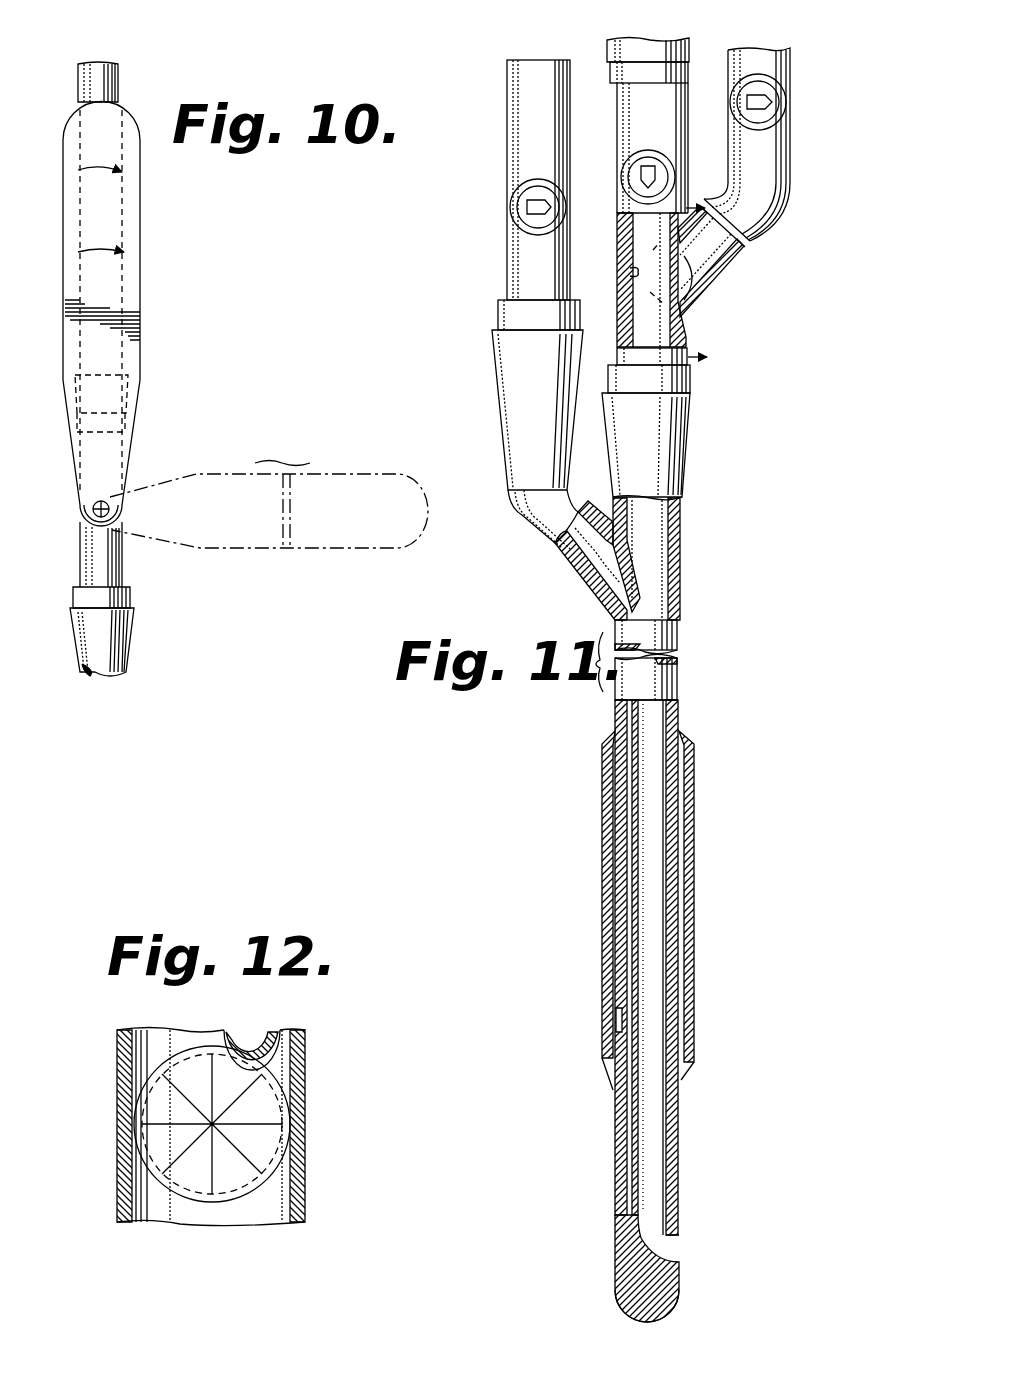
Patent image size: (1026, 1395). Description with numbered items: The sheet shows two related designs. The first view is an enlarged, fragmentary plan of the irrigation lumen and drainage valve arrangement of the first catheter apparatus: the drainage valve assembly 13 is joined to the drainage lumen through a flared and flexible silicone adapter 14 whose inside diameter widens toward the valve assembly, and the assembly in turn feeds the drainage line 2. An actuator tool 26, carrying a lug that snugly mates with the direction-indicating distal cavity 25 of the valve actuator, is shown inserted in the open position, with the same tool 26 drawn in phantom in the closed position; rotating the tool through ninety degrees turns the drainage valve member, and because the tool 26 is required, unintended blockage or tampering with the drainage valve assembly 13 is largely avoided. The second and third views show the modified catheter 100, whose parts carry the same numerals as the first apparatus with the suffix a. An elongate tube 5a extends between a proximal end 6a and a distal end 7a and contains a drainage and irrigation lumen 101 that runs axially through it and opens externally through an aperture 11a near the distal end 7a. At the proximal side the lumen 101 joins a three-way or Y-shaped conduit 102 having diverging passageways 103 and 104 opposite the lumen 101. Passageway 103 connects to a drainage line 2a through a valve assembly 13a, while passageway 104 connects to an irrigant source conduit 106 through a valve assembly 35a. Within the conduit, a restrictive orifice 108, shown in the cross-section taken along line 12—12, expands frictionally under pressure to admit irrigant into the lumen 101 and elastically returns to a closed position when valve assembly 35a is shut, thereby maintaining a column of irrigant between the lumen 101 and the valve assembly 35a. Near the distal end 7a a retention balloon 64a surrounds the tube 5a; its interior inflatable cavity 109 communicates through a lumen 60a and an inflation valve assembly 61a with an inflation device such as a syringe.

In FIG. 10, the drainage line 2 is at (77, 90).
In FIG. 10, the actuator tool 26 is at (141, 209).
In FIG. 10, the distal cavity 25 is at (90, 511).
In FIG. 10, the drainage valve assembly 13 is at (79, 558).
In FIG. 10, the flared and flexible silicone adapter 14 is at (129, 660).
In FIG. 11, the drainage line 2a is at (692, 48).
In FIG. 11, the irrigant source conduit 106 is at (790, 74).
In FIG. 11, the valve assembly 35a is at (787, 124).
In FIG. 11, the valve assembly 13a is at (626, 145).
In FIG. 11, the inflation valve assembly 61a is at (507, 166).
In FIG. 11, the proximal end 12 is at (670, 282).
In FIG. 11, the passageway 103 is at (628, 272).
In FIG. 12, the passageway 103 is at (155, 1032).
In FIG. 11, the passageway 104 is at (740, 258).
In FIG. 11, the restrictive orifice 108 is at (700, 288).
In FIG. 12, the restrictive orifice 108 is at (272, 1110).
In FIG. 11, the three-way or Y-shaped conduit 102 is at (688, 326).
In FIG. 12, the three-way or Y-shaped conduit 102 is at (116, 1176).
In FIG. 11, the proximal end 6a is at (690, 434).
In FIG. 11, the lumen 60a is at (586, 590).
In FIG. 11, the catheter 100 is at (596, 702).
In FIG. 11, the drainage and irrigation lumen 101 is at (667, 778).
In FIG. 11, the elongate tube 5a is at (694, 872).
In FIG. 11, the retention balloon 64a is at (603, 917).
In FIG. 11, the interior inflatable cavity 109 is at (615, 1022).
In FIG. 11, the aperture 11a is at (668, 1258).
In FIG. 11, the distal end 7a is at (628, 1318).